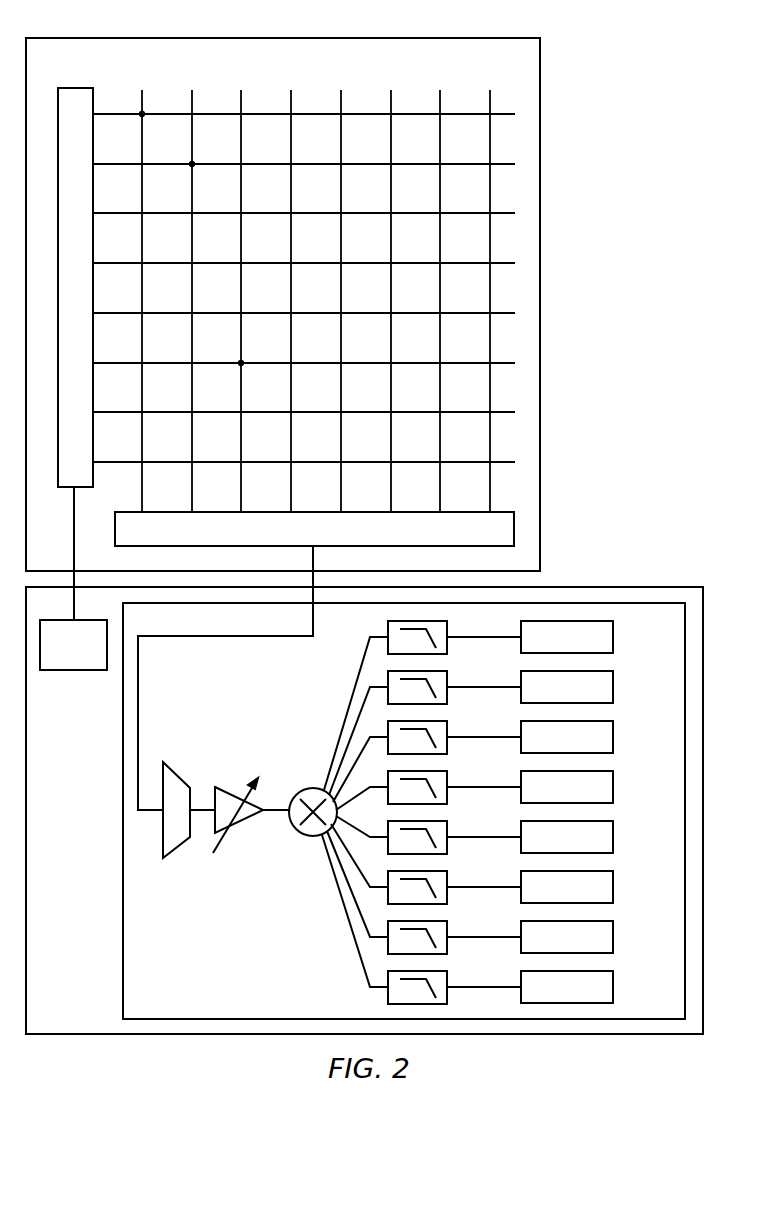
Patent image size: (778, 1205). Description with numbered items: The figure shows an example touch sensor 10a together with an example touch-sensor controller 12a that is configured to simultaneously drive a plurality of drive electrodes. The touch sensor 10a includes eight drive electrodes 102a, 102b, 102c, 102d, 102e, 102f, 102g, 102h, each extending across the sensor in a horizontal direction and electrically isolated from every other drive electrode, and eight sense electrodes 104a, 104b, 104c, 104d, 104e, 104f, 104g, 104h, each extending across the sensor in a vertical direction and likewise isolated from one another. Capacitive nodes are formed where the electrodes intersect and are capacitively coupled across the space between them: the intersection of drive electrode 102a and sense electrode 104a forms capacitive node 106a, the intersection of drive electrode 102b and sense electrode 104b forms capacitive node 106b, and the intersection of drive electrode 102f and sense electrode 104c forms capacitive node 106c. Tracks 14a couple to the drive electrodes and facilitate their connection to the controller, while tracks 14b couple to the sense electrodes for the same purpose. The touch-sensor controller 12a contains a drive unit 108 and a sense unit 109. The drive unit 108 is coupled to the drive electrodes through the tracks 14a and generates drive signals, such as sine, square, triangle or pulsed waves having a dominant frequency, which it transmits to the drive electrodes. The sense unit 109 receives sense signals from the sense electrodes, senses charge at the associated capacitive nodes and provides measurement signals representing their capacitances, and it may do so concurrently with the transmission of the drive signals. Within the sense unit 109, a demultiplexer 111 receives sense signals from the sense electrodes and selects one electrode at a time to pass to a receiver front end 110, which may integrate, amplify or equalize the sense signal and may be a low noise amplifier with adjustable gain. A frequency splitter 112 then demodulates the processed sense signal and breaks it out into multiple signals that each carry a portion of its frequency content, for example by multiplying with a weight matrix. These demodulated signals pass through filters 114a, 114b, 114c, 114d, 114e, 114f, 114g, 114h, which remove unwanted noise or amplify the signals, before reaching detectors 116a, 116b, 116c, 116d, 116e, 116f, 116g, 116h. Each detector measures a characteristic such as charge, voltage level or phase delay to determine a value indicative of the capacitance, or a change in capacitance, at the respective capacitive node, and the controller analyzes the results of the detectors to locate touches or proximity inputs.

The touch sensor 10a is at (545, 65).
The tracks 14a is at (75, 88).
The tracks 14b is at (452, 512).
The drive electrode 102a is at (503, 112).
The drive electrode 102b is at (503, 162).
The drive electrode 102c is at (503, 211).
The drive electrode 102d is at (503, 261).
The drive electrode 102e is at (503, 311).
The drive electrode 102f is at (503, 361).
The drive electrode 102g is at (503, 410).
The drive electrode 102h is at (503, 460).
The sense electrode 104a is at (139, 100).
The sense electrode 104b is at (189, 100).
The sense electrode 104c is at (238, 100).
The sense electrode 104d is at (288, 100).
The sense electrode 104e is at (338, 100).
The sense electrode 104f is at (388, 100).
The sense electrode 104g is at (437, 100).
The sense electrode 104h is at (487, 100).
The capacitive node 106a is at (143, 116).
The capacitive node 106b is at (193, 166).
The capacitive node 106c is at (242, 365).
The touch-sensor controller 12a is at (656, 585).
The drive unit 108 is at (75, 671).
The sense unit 109 is at (118, 914).
The receiver front end 110 is at (238, 823).
The demultiplexer 111 is at (180, 845).
The frequency splitter 112 is at (298, 792).
The filter 114a is at (449, 633).
The filter 114b is at (449, 683).
The filter 114c is at (449, 733).
The filter 114d is at (449, 783).
The filter 114e is at (447, 851).
The filter 114f is at (447, 901).
The filter 114g is at (447, 951).
The filter 114h is at (447, 1001).
The detector 116a is at (613, 640).
The detector 116b is at (613, 690).
The detector 116c is at (613, 740).
The detector 116d is at (613, 790).
The detector 116e is at (613, 840).
The detector 116f is at (613, 890).
The detector 116g is at (613, 940).
The detector 116h is at (613, 990).